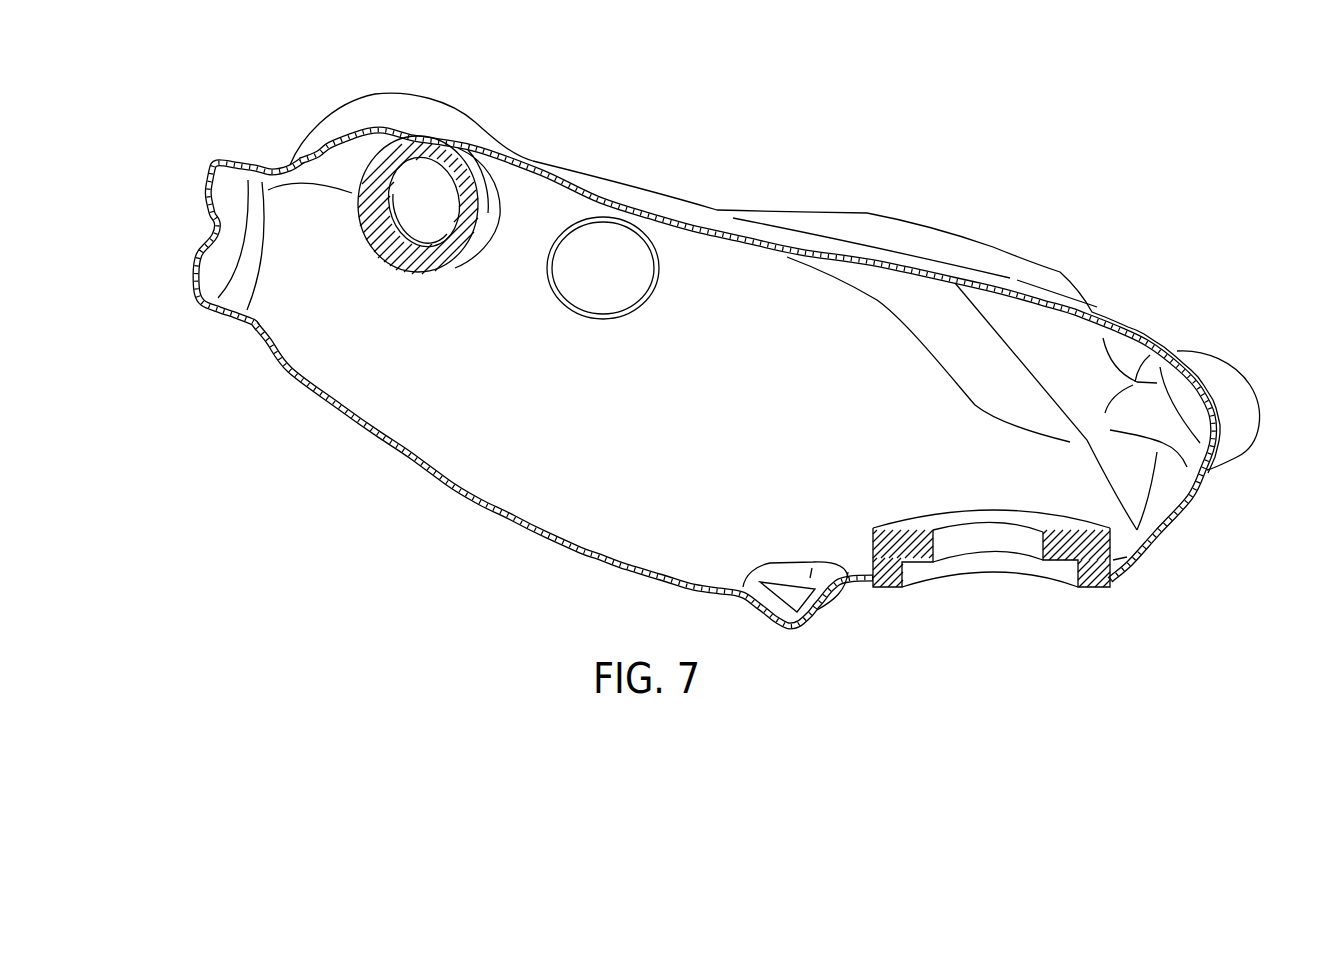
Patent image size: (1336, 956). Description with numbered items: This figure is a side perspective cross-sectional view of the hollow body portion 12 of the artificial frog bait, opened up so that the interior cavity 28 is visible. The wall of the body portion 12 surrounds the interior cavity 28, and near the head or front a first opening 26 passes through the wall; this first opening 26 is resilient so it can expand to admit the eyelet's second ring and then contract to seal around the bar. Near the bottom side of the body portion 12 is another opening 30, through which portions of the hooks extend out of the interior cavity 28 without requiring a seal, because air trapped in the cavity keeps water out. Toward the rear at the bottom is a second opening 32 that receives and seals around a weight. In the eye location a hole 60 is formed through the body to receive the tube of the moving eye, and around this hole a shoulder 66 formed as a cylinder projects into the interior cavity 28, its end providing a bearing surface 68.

The body portion 12 is at (573, 513).
The first opening 26 is at (193, 221).
The interior cavity 28 is at (524, 445).
The opening 30 is at (820, 622).
The second opening 32 is at (988, 570).
The hole 60 is at (422, 170).
The shoulder 66 is at (488, 212).
The bearing surface 68 is at (468, 172).